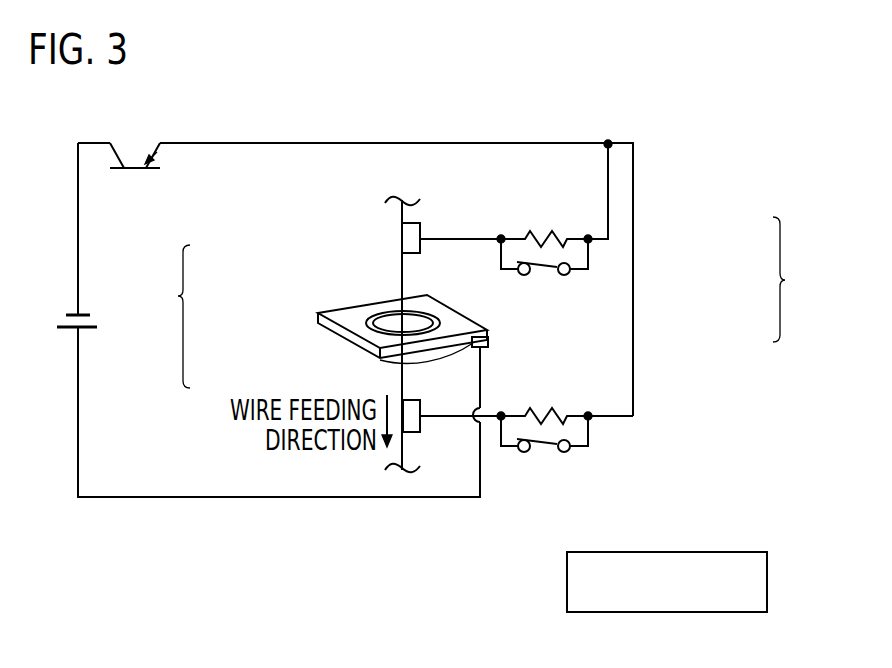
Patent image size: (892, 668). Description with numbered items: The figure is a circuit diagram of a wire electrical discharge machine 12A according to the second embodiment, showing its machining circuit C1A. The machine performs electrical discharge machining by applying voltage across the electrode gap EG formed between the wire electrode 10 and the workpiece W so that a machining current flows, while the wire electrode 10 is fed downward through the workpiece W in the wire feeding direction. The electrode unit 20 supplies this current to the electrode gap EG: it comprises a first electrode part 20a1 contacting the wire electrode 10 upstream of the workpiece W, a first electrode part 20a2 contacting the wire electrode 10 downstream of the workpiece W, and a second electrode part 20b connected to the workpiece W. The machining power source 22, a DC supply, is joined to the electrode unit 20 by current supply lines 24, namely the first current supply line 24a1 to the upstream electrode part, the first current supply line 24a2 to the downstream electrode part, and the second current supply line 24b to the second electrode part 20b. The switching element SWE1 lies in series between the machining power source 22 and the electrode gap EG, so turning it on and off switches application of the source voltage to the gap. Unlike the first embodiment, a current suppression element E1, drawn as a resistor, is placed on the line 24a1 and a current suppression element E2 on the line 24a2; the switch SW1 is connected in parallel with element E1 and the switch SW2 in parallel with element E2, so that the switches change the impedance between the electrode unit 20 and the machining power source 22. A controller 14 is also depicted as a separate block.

The wire electrical discharge machine 12A is at (233, 83).
The machining circuit C1A is at (491, 138).
The switching element SWE1 is at (134, 176).
The machining power source 22 is at (63, 306).
The electrode unit 20 is at (171, 316).
The first electrode part 20a1 is at (402, 238).
The first electrode part 20a2 is at (404, 398).
The second electrode part 20b is at (380, 360).
The workpiece W is at (352, 313).
The electrode gap EG is at (386, 326).
The wire electrode 10 is at (404, 280).
The current suppression element E1 is at (548, 224).
The current suppression element E2 is at (565, 405).
The switch SW1 is at (548, 278).
The switch SW2 is at (560, 457).
The first current supply line 24a1 is at (610, 225).
The first current supply line 24a2 is at (634, 273).
The second current supply line 24b is at (481, 378).
The current supply lines 24 is at (792, 279).
The controller 14 is at (716, 548).